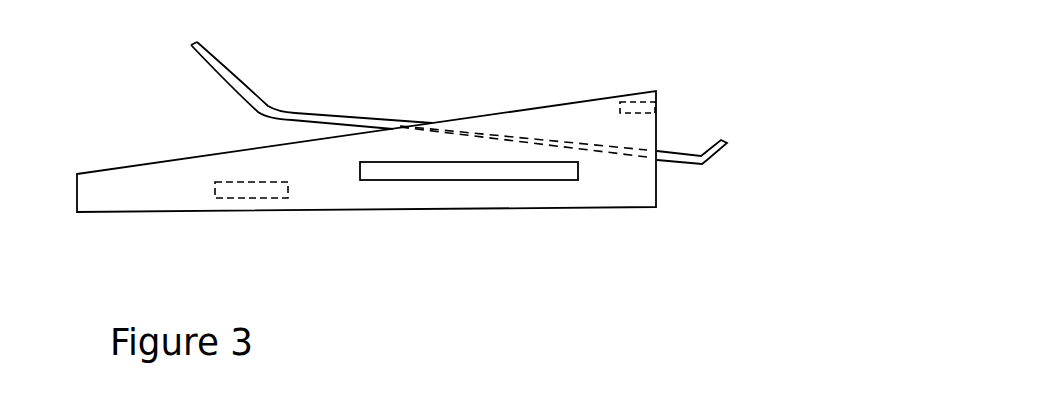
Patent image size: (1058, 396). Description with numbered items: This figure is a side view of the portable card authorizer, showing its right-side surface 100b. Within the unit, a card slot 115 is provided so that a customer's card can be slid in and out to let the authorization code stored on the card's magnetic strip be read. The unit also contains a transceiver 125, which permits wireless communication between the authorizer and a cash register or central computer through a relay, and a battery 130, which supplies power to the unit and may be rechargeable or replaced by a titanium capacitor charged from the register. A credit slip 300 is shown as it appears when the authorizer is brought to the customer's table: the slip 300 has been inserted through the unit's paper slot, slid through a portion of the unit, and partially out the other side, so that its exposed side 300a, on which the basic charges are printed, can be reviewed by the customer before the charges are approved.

The right-side surface 100b is at (612, 190).
The card slot 115 is at (433, 180).
The battery 130 is at (238, 198).
The transceiver 125 is at (656, 101).
The credit slip 300 is at (298, 112).
The side of credit slip 300a is at (218, 76).